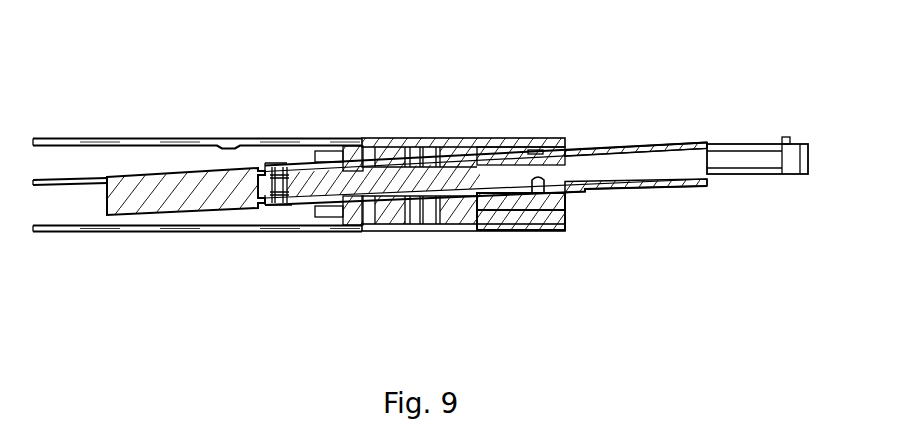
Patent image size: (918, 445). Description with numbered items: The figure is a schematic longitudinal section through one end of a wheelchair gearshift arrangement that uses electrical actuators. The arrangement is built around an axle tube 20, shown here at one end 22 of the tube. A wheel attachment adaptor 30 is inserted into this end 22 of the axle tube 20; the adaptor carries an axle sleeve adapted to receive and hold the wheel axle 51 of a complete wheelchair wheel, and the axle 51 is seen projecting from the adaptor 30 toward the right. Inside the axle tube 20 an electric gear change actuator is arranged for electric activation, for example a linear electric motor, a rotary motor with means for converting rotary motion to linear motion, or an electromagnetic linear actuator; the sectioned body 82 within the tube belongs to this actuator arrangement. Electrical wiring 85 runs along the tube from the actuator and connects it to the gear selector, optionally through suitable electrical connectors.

The axle tube 20 is at (303, 146).
The end of the axle tube 22 is at (566, 218).
The wheel attachment adaptor 30 is at (494, 132).
The wheel axle 51 is at (647, 152).
The plunger body 82 is at (195, 185).
The electrical wiring 85 is at (83, 177).